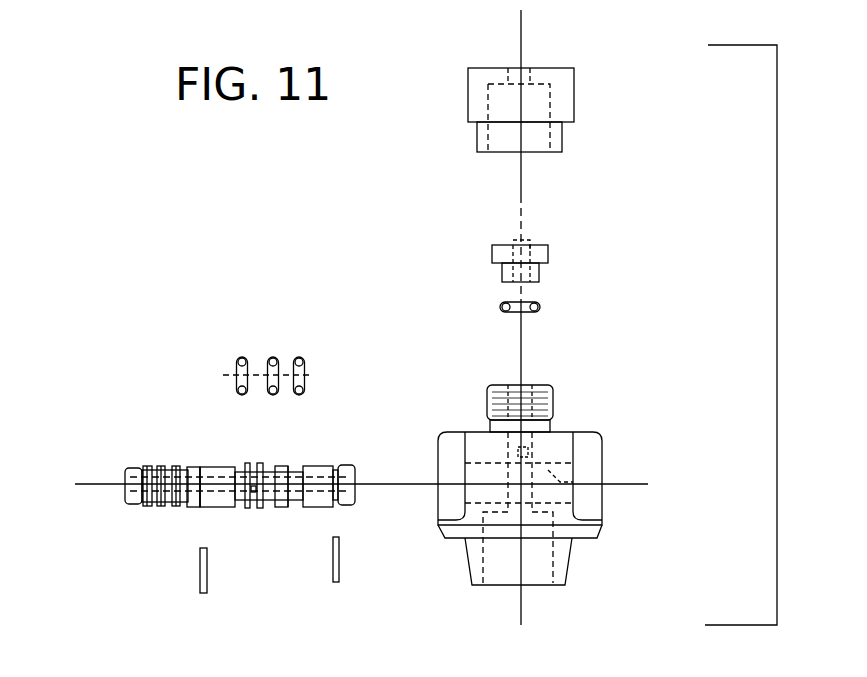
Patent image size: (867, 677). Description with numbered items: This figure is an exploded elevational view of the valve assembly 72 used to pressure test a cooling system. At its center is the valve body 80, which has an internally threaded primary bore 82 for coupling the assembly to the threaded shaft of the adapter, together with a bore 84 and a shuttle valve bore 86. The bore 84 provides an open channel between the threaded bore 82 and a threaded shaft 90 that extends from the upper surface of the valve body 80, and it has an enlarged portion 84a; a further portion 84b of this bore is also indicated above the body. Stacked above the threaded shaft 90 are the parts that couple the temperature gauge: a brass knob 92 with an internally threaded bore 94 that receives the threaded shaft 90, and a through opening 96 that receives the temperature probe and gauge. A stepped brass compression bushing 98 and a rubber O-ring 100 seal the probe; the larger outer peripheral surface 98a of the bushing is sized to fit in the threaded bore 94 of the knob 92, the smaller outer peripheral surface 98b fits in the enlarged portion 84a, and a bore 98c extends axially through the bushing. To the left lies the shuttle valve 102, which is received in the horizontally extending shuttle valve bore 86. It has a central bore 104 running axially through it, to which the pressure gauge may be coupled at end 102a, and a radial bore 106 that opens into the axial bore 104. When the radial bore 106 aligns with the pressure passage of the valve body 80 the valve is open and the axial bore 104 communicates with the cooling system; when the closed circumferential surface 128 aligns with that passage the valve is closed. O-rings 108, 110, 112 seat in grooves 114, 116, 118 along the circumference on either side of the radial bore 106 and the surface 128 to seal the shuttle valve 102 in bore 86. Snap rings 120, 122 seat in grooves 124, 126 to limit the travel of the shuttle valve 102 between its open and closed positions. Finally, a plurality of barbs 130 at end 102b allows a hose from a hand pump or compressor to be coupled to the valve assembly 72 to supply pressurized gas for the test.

The valve assembly 72 is at (777, 337).
The valve body 80 is at (602, 532).
The primary bore 82 is at (545, 585).
The bore 84 is at (528, 450).
The enlarged portion of the bore 84a is at (533, 387).
The passage 84b is at (508, 387).
The shuttle valve bore 86 is at (578, 482).
The threaded shaft 90 is at (572, 390).
The knob 92 is at (575, 73).
The threaded bore 94 is at (537, 137).
The through opening 96 is at (525, 77).
The compression bushing 98 is at (550, 255).
The larger outer peripheral surface 98a is at (490, 257).
The smaller outer peripheral surface 98b is at (500, 273).
The bore 98c is at (530, 242).
The O-ring 100 is at (540, 307).
The shuttle valve 102 is at (170, 520).
The end of the shuttle valve 102a is at (348, 505).
The end of the shuttle valve 102b is at (127, 505).
The central bore 104 is at (364, 484).
The radial bore 106 is at (243, 505).
The O-ring 108 is at (242, 357).
The O-ring 110 is at (273, 355).
The O-ring 112 is at (300, 355).
The groove 114 is at (195, 465).
The groove 116 is at (246, 463).
The groove 118 is at (283, 465).
The snap ring 120 is at (202, 593).
The snap ring 122 is at (342, 560).
The groove 124 is at (200, 507).
The groove 126 is at (338, 507).
The closed circumferential surface 128 is at (282, 507).
The barbs 130 is at (147, 465).